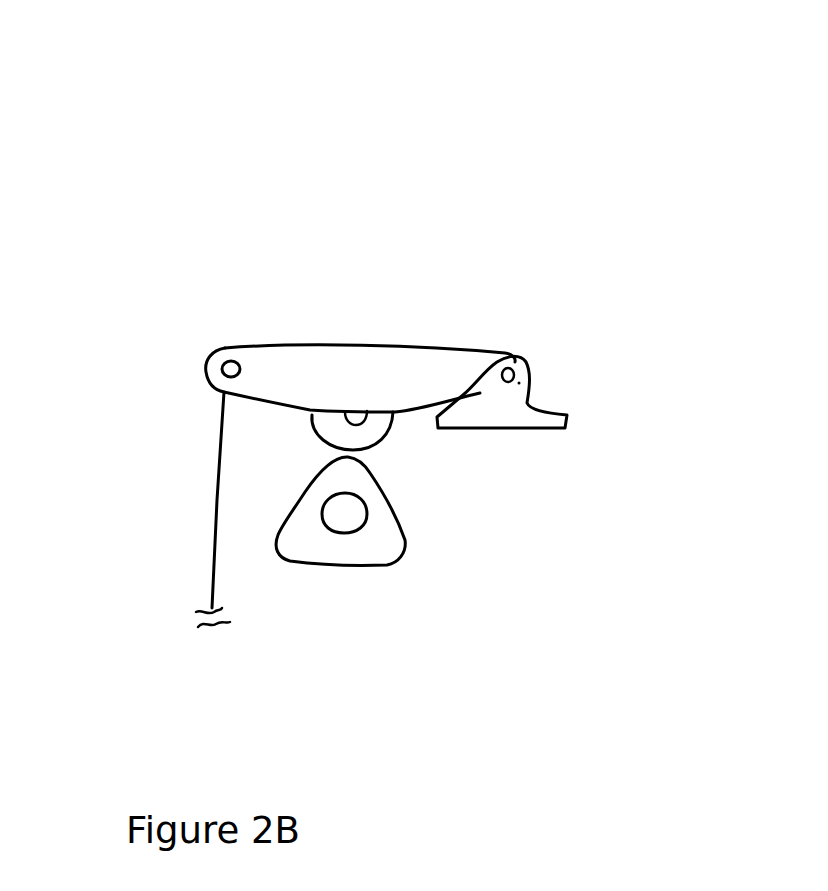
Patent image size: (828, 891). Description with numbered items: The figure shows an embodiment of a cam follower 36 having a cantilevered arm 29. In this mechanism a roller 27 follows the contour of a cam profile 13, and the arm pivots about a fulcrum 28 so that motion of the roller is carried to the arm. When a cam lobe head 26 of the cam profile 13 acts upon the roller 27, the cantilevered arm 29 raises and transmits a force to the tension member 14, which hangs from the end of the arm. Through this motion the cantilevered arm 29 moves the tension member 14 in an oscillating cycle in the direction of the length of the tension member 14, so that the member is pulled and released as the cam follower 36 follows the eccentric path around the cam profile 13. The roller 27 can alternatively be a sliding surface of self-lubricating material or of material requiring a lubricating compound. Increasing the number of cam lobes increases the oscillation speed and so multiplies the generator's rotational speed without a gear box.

The cam follower 36 is at (218, 192).
The cantilevered arm 29 is at (393, 347).
The fulcrum 28 is at (517, 430).
The roller 27 is at (393, 433).
The cam lobe head 26 is at (397, 562).
The cam profile 13 is at (337, 568).
The tension member 14 is at (217, 533).